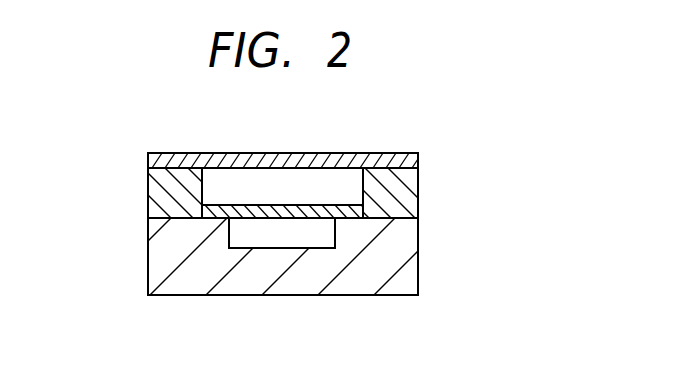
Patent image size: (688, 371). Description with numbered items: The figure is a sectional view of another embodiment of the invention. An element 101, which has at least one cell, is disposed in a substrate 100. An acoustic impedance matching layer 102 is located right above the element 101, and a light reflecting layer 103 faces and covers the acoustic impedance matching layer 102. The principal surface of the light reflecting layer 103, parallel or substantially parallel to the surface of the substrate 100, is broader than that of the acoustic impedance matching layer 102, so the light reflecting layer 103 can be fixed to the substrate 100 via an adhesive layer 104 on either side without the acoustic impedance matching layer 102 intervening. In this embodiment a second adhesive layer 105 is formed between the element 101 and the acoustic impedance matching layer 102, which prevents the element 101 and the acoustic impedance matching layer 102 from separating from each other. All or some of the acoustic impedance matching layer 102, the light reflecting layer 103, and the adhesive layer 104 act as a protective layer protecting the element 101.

The substrate 100 is at (408, 253).
The element 101 is at (282, 238).
The acoustic impedance matching layer 102 is at (275, 190).
The light reflecting layer 103 is at (408, 162).
The adhesive layer 104 is at (165, 193).
The second adhesive layer 105 is at (246, 212).